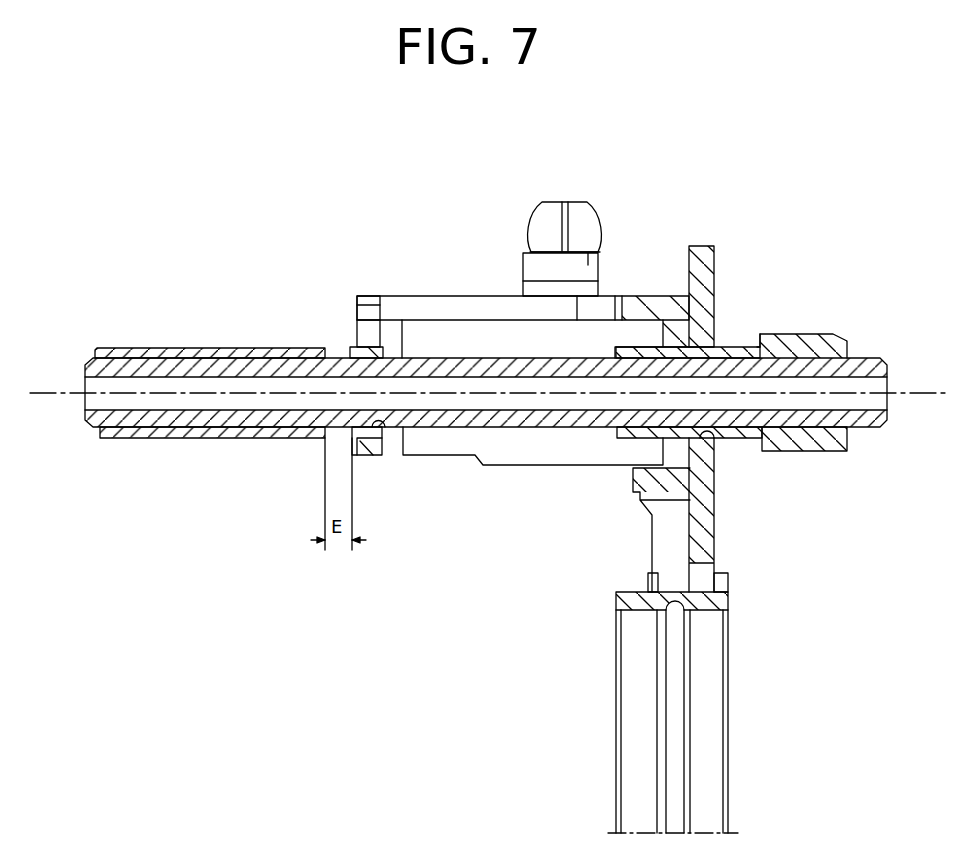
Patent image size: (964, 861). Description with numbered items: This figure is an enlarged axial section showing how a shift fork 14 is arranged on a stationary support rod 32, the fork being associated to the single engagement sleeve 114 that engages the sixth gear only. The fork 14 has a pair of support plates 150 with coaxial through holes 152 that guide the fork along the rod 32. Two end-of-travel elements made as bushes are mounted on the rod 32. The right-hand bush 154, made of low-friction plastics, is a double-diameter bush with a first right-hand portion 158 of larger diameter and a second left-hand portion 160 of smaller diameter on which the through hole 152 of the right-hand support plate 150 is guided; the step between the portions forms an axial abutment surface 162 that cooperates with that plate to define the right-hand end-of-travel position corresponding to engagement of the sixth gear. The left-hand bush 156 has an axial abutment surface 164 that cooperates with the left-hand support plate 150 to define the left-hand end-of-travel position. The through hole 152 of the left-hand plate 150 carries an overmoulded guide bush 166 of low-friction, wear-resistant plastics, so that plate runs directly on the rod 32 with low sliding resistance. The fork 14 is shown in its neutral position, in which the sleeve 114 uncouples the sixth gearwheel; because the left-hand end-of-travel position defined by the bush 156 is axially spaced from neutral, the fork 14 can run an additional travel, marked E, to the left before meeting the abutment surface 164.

The shift fork 14 is at (645, 284).
The support rod 32 is at (472, 352).
The engagement sleeve 114 is at (730, 598).
The support plates 150 is at (707, 264).
The through holes 152 is at (376, 424).
The right-hand bush 154 is at (815, 450).
The left-hand bush 156 is at (160, 440).
The first right-hand portion 158 is at (813, 338).
The second left-hand portion 160 is at (735, 350).
The axial abutment surface 162 is at (757, 337).
The axial abutment surface 164 is at (326, 351).
The guide bush 166 is at (387, 352).